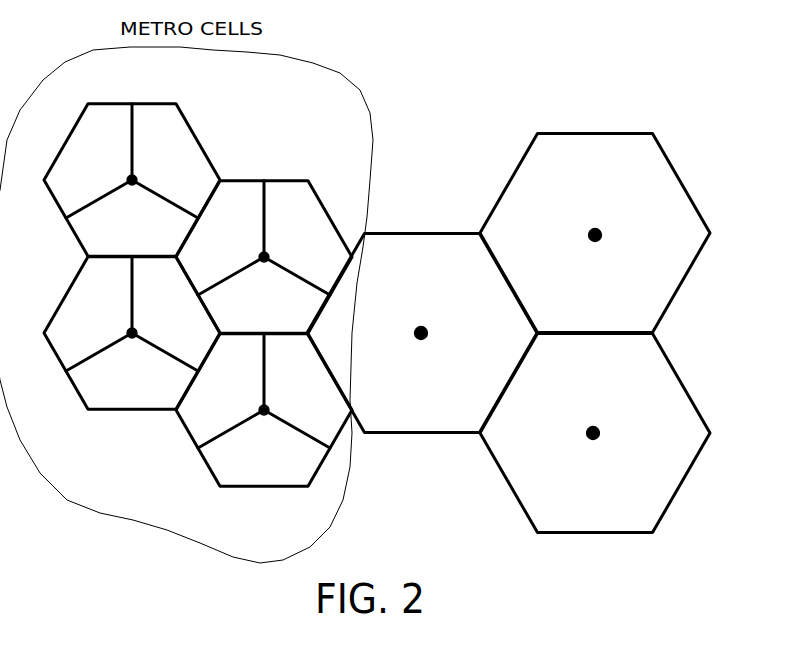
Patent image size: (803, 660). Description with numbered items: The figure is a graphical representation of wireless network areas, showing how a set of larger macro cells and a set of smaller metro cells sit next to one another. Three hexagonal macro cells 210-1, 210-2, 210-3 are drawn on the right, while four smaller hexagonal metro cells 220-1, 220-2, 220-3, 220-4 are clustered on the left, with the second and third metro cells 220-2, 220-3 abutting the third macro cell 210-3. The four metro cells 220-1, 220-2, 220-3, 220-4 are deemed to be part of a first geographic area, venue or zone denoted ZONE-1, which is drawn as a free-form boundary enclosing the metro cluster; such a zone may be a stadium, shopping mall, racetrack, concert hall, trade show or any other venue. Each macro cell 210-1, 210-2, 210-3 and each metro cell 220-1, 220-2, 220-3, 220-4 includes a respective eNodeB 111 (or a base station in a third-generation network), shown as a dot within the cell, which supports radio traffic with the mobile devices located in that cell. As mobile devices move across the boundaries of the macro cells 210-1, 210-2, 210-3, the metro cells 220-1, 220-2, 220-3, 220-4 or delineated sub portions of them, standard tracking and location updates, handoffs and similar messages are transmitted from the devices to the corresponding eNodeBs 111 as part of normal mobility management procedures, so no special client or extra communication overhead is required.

The eNodeB 111 is at (138, 180).
The macro cell 210-1 is at (663, 151).
The macro cell 210-2 is at (676, 368).
The macro cell 210-3 is at (414, 232).
The metro cell 220-1 is at (134, 103).
The metro cell 220-2 is at (276, 181).
The metro cell 220-3 is at (250, 487).
The metro cell 220-4 is at (127, 410).
The zone ZONE-1 is at (177, 536).